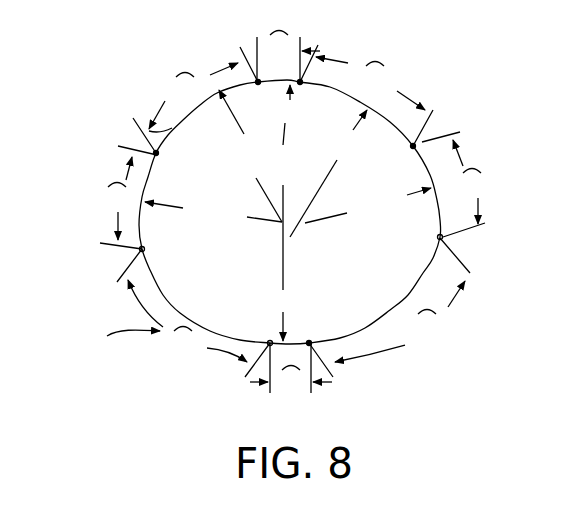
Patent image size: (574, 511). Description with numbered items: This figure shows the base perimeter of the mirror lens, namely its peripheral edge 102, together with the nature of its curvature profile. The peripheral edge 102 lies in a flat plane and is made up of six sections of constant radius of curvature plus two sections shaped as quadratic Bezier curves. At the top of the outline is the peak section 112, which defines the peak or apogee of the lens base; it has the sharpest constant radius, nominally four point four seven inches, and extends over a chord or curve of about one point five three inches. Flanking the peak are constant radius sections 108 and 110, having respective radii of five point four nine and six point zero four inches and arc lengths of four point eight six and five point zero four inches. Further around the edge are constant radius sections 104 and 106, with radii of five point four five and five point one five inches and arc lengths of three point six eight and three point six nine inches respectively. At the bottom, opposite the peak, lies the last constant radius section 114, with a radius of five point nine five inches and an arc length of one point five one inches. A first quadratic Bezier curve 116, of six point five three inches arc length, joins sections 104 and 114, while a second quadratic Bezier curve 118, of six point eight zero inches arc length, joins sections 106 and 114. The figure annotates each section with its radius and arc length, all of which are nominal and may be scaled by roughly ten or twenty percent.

The peripheral edge 102 is at (130, 304).
The constant radius section 104 is at (138, 213).
The constant radius section 106 is at (440, 208).
The constant radius section 108 is at (172, 126).
The constant radius section 110 is at (417, 107).
The peak section 112 is at (251, 49).
The constant radius section 114 is at (272, 346).
The first quadratic Bezier curve 116 is at (216, 338).
The second quadratic Bezier curve 118 is at (427, 273).